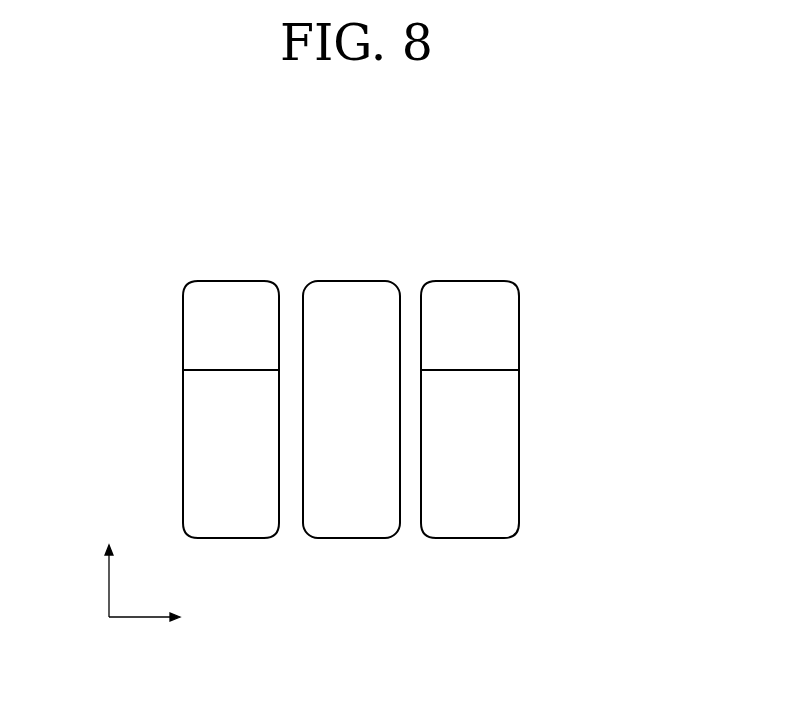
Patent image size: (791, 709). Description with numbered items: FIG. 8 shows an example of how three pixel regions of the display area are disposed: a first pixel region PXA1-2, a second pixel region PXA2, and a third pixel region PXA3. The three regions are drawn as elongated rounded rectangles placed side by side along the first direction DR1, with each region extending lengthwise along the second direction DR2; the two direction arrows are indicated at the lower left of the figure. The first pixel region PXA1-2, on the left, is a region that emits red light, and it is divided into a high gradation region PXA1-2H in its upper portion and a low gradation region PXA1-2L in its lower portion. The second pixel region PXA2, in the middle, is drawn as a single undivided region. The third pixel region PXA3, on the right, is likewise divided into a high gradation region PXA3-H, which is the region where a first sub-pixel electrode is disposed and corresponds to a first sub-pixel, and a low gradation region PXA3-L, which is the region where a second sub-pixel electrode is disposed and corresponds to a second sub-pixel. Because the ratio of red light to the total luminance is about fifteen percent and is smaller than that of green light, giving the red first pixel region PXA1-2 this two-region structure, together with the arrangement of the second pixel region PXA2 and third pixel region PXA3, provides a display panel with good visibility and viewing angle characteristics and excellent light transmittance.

The first pixel region PXA1-2 is at (288, 204).
The low gradation region PXA1-2L is at (197, 412).
The high gradation region PXA1-2H is at (236, 297).
The second pixel region PXA2 is at (347, 297).
The third pixel region PXA3 is at (615, 204).
The high gradation region PXA3-H is at (465, 297).
The low gradation region PXA3-L is at (503, 410).
The first direction DR1 is at (166, 619).
The second direction DR2 is at (108, 568).